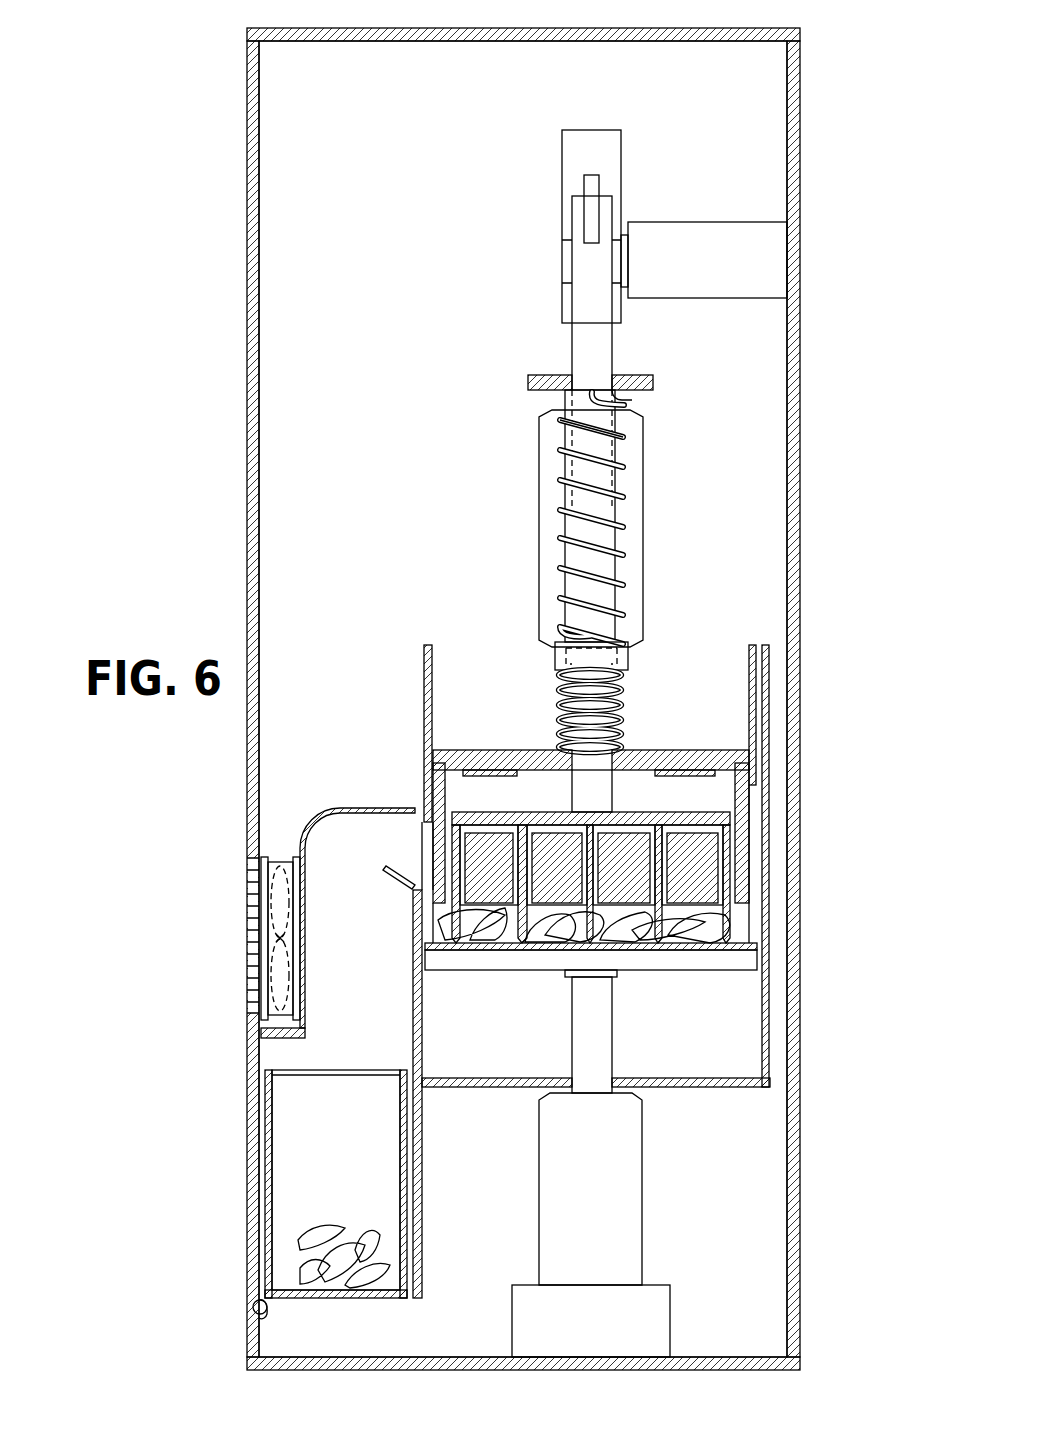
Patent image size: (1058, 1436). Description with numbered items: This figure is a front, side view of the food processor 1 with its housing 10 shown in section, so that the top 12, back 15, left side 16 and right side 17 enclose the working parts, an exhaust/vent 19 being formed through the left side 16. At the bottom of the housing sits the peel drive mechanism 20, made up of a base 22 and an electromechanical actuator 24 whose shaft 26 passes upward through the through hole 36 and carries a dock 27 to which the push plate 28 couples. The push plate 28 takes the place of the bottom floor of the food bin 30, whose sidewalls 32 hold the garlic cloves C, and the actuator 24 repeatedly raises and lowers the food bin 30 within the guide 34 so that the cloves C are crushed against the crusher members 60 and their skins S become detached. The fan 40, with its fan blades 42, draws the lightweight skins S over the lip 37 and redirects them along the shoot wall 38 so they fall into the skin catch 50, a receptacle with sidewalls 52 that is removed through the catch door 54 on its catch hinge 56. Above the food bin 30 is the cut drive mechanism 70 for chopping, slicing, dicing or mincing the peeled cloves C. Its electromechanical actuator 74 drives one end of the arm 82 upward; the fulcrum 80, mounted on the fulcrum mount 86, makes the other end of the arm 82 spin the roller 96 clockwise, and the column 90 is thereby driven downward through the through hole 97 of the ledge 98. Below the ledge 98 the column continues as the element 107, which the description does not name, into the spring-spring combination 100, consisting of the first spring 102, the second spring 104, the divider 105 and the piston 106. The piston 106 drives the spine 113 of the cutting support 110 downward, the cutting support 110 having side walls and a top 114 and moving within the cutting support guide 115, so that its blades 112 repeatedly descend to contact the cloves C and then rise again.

The food processor 1 is at (232, 100).
The housing 10 is at (754, 28).
The top 12 is at (428, 28).
The back 15 is at (372, 339).
The left side 16 is at (247, 330).
The right side 17 is at (801, 330).
The exhaust/vent 19 is at (247, 900).
The peel drive mechanism 20 is at (694, 1223).
The base 22 is at (579, 1328).
The electromechanical actuator 24 is at (579, 1207).
The shaft 26 is at (572, 1058).
The dock 27 is at (595, 978).
The push plate 28 is at (500, 970).
The food bin 30 is at (410, 795).
The sidewalls 32 is at (422, 832).
The guide 34 is at (768, 740).
The through hole 36 is at (600, 1082).
The lip 37 is at (395, 880).
The shoot wall 38 is at (343, 808).
The fan 40 is at (281, 857).
The fan blades 42 is at (294, 893).
The skin catch 50 is at (322, 1178).
The sidewalls 52 is at (395, 1120).
The catch door 54 is at (247, 1175).
The catch hinge 56 is at (253, 1309).
The skin S is at (377, 1242).
The crusher members 60 is at (476, 881).
The cut drive mechanism 70 is at (484, 307).
The electromechanical actuator 74 is at (643, 530).
The fulcrum 80 is at (562, 262).
The arm 82 is at (562, 160).
The fulcrum mount 86 is at (697, 275).
The column 90 is at (572, 350).
The roller 96 is at (599, 180).
The through hole 97 is at (602, 386).
The ledge 98 is at (653, 378).
The spring-spring combination 100 is at (522, 586).
The first spring 102 is at (627, 470).
The second spring 104 is at (623, 705).
The divider 105 is at (628, 655).
The piston 106 is at (612, 797).
The press rod 107 is at (565, 405).
The cutting support 110 is at (670, 962).
The blades 112 is at (462, 948).
The spine 113 is at (545, 812).
The top 114 is at (472, 750).
The cutting support guide 115 is at (428, 645).
The garlic cloves C is at (543, 925).